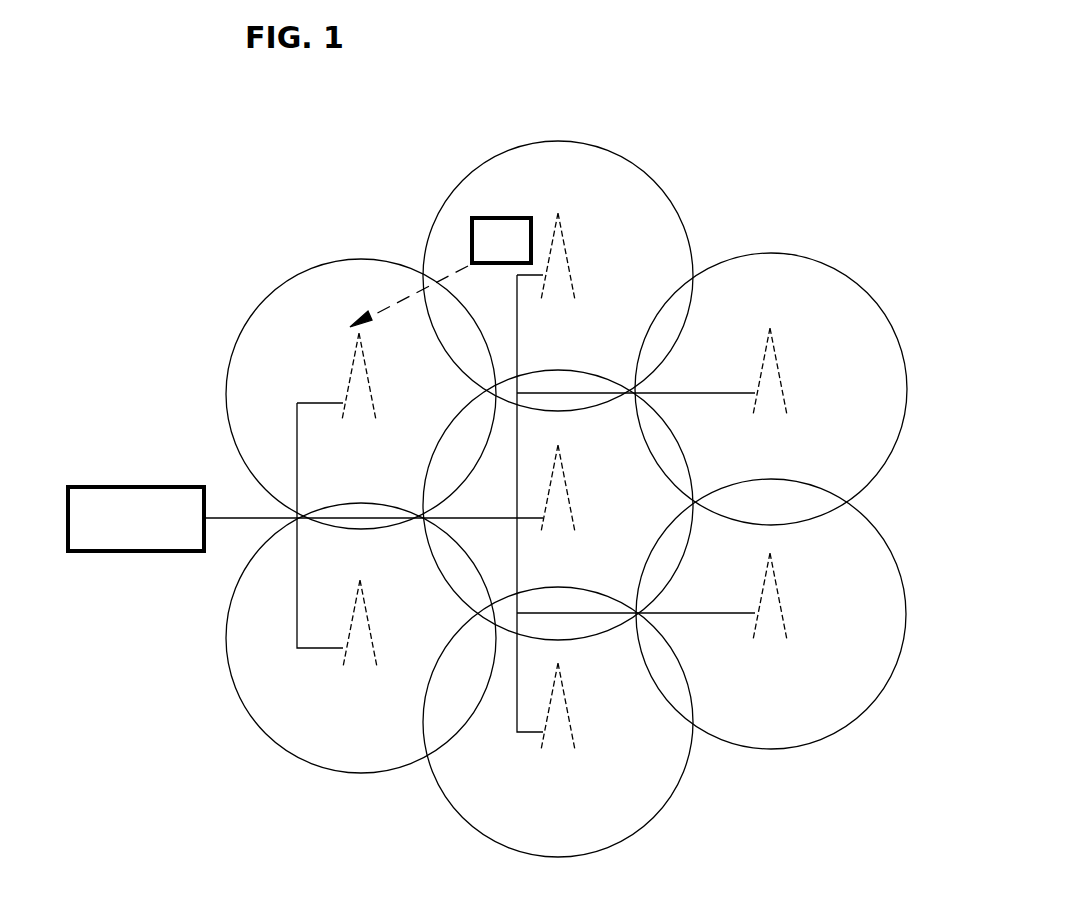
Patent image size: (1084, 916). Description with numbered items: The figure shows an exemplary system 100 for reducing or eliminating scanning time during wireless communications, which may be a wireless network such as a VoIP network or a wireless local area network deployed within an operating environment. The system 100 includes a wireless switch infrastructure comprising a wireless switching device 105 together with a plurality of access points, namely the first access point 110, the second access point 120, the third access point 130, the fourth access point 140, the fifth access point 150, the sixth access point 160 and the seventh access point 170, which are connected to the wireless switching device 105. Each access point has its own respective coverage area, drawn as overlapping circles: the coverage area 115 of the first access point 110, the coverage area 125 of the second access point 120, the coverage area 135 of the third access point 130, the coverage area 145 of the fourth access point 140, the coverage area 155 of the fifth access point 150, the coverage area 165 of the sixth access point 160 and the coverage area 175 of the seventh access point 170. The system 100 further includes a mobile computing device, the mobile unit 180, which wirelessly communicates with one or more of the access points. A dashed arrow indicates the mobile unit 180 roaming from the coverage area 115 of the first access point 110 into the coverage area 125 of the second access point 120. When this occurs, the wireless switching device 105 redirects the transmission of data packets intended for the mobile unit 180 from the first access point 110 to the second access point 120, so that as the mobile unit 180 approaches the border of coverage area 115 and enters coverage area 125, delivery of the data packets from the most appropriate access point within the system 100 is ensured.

The system 100 is at (713, 62).
The wireless switching device 105 is at (137, 486).
The AP1 110 is at (565, 250).
The coverage area 115 is at (666, 184).
The AP2 120 is at (368, 358).
The coverage area 125 is at (262, 290).
The AP3 130 is at (567, 473).
The coverage area 135 is at (697, 480).
The AP4 140 is at (785, 355).
The coverage area 145 is at (810, 253).
The AP5 150 is at (368, 597).
The coverage area 155 is at (263, 733).
The AP6 160 is at (568, 688).
The coverage area 165 is at (488, 843).
The AP7 170 is at (785, 570).
The coverage area 175 is at (887, 692).
The MU 180 is at (504, 218).